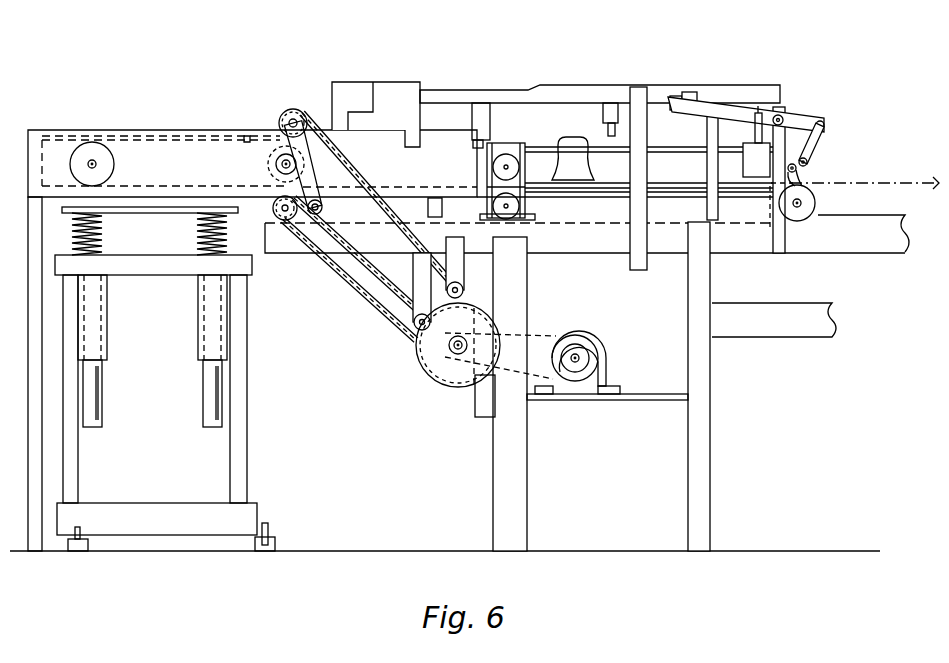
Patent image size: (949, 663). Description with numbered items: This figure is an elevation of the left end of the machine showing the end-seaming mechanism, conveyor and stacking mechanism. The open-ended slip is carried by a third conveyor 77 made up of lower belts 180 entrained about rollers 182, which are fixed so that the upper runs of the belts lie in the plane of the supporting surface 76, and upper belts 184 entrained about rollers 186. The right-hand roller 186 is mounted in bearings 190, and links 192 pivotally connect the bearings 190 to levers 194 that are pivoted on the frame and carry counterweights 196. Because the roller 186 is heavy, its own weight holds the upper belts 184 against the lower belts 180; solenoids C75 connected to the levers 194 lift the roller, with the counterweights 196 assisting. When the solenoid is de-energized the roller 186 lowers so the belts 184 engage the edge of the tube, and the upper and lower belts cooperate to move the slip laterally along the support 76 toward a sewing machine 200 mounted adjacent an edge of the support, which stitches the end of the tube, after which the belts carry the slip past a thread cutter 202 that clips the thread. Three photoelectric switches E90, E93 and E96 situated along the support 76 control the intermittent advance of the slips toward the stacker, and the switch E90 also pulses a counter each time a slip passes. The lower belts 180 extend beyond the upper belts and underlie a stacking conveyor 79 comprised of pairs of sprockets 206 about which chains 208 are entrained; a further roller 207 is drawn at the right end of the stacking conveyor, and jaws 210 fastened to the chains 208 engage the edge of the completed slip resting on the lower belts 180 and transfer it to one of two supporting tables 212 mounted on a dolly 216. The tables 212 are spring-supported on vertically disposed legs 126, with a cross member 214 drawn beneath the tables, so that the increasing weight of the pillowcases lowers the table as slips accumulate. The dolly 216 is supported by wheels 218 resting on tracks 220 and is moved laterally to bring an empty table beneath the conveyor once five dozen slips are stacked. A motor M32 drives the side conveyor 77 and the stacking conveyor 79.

The stacking conveyor 79 is at (163, 126).
The sprockets 206 is at (94, 142).
The drive roller 207 is at (276, 162).
The chains 208 is at (204, 138).
The jaws 210 is at (247, 134).
The supporting tables 212 is at (158, 213).
The cross head 214 is at (150, 270).
The legs 126 is at (101, 408).
The dolly 216 is at (160, 500).
The wheels 218 is at (270, 526).
The tracks 220 is at (275, 546).
The photoelectric switch E96 is at (352, 92).
The photoelectric switch E93 is at (478, 112).
The photoelectric switch E90 is at (610, 100).
The counterweights 196 is at (697, 92).
The levers 194 is at (806, 118).
The links 192 is at (808, 163).
The bearings 190 is at (812, 176).
The rollers 186 is at (510, 152).
The thread cutter 202 is at (547, 163).
The sewing machine 200 is at (560, 186).
The upper belts 184 is at (622, 168).
The solenoids C75 is at (743, 160).
The rollers 182 is at (816, 203).
The supporting surface 76 is at (602, 238).
The third conveyor 77 is at (743, 213).
The lower belts 180 is at (688, 226).
The motor M32 is at (604, 353).